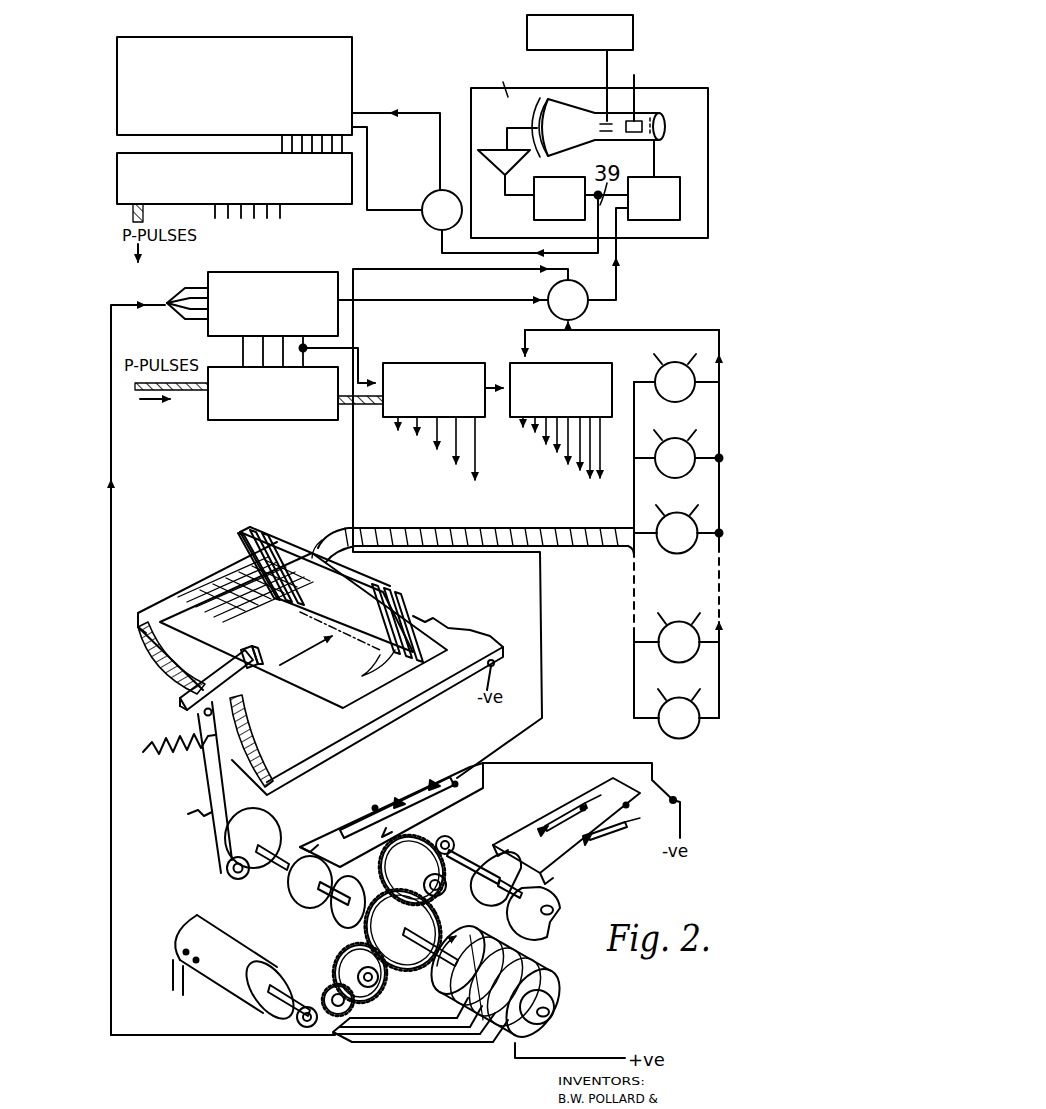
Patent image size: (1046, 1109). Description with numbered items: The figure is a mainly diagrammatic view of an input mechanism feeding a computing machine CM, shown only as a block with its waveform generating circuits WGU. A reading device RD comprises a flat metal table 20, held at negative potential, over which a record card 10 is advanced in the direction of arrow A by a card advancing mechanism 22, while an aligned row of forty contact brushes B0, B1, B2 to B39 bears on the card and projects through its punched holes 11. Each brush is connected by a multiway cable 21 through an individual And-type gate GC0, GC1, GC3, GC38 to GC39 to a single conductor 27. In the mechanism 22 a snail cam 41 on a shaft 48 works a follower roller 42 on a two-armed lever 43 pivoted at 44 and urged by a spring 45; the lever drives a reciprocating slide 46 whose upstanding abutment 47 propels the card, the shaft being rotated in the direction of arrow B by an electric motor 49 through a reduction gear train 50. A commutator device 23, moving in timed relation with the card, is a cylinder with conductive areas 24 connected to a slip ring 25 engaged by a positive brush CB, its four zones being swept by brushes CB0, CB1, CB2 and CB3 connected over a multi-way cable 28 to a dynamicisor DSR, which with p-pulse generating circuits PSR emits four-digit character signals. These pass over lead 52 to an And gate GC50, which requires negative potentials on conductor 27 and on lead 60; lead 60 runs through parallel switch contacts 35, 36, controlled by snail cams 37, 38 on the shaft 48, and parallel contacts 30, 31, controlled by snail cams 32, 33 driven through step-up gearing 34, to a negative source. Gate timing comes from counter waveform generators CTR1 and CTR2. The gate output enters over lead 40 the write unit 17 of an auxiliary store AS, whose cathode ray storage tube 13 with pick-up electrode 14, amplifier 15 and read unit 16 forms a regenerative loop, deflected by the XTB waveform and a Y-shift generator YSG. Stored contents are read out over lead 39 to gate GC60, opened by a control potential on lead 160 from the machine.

The computing machine CM is at (338, 73).
The waveform generating circuits WGU is at (322, 192).
The lead 39 is at (438, 128).
The lead 160 is at (353, 152).
The gate circuit GC60 is at (423, 204).
The Y-shift generator YSG is at (633, 27).
The auxiliary store AS is at (694, 94).
The XTB waveform XTB is at (648, 92).
The cathode ray storage tube 13 is at (587, 144).
The pick-up electrode 14 is at (542, 107).
The amplifier 15 is at (490, 150).
The read unit 16 is at (534, 206).
The write unit 17 is at (667, 178).
The lead 40 is at (612, 256).
The dynamicisor DSR is at (251, 282).
The multi-way cable 28 is at (113, 460).
The dynamicisor output connection 52 is at (421, 300).
The P-pulse generating circuits PSR is at (236, 422).
The lead 60 is at (405, 266).
The counter waveform generator CTR1 is at (424, 352).
The counter waveform generator CTR2 is at (603, 362).
The gate circuit GC50 is at (586, 313).
The conductor 27 is at (689, 336).
The gate circuit GC0 is at (670, 402).
The gate circuit GC1 is at (682, 476).
The gate circuit GC3 is at (690, 551).
The gate circuit GC38 is at (694, 660).
The gate circuit GC39 is at (664, 737).
The multiway cable 21 is at (383, 533).
The record card 10 is at (292, 690).
The flat metal table 20 is at (201, 704).
The reading device RD is at (158, 612).
The direction of card movement A is at (306, 660).
The direction of shaft rotation B is at (331, 759).
The contact brush B0 is at (234, 555).
The contact brush B1 is at (250, 535).
The contact brush B2 is at (262, 533).
The contact brush B39 is at (418, 622).
The punched holes 11 is at (378, 662).
The reciprocating slide 46 is at (210, 688).
The upstanding abutment 47 is at (262, 660).
The spring 45 is at (174, 733).
The two-armed lever 43 is at (203, 764).
The pivot 44 is at (184, 807).
The card advancing mechanism 22 is at (214, 876).
The follower roller 42 is at (236, 880).
The snail cam 41 is at (272, 822).
The shaft 48 is at (290, 848).
The snail cam 37 is at (305, 897).
The snail cam 38 is at (340, 913).
The step-up gearing 34 is at (424, 898).
The conductive areas 24 is at (470, 950).
The reduction gear train 50 is at (338, 962).
The electric motor 49 is at (186, 935).
The snail cam 32 is at (517, 874).
The snail cam 33 is at (562, 902).
The commutator device 23 is at (535, 958).
The slip ring 25 is at (554, 1008).
The contact brush CB is at (479, 1038).
The contact brush CB0 is at (492, 1046).
The contact brush CB1 is at (478, 1040).
The contact brush CB2 is at (440, 1040).
The contact brush CB3 is at (445, 1012).
The switch contacts 36 is at (398, 805).
The switch contacts 35 is at (338, 826).
The switch contacts 30 is at (537, 818).
The switch contacts 31 is at (598, 832).